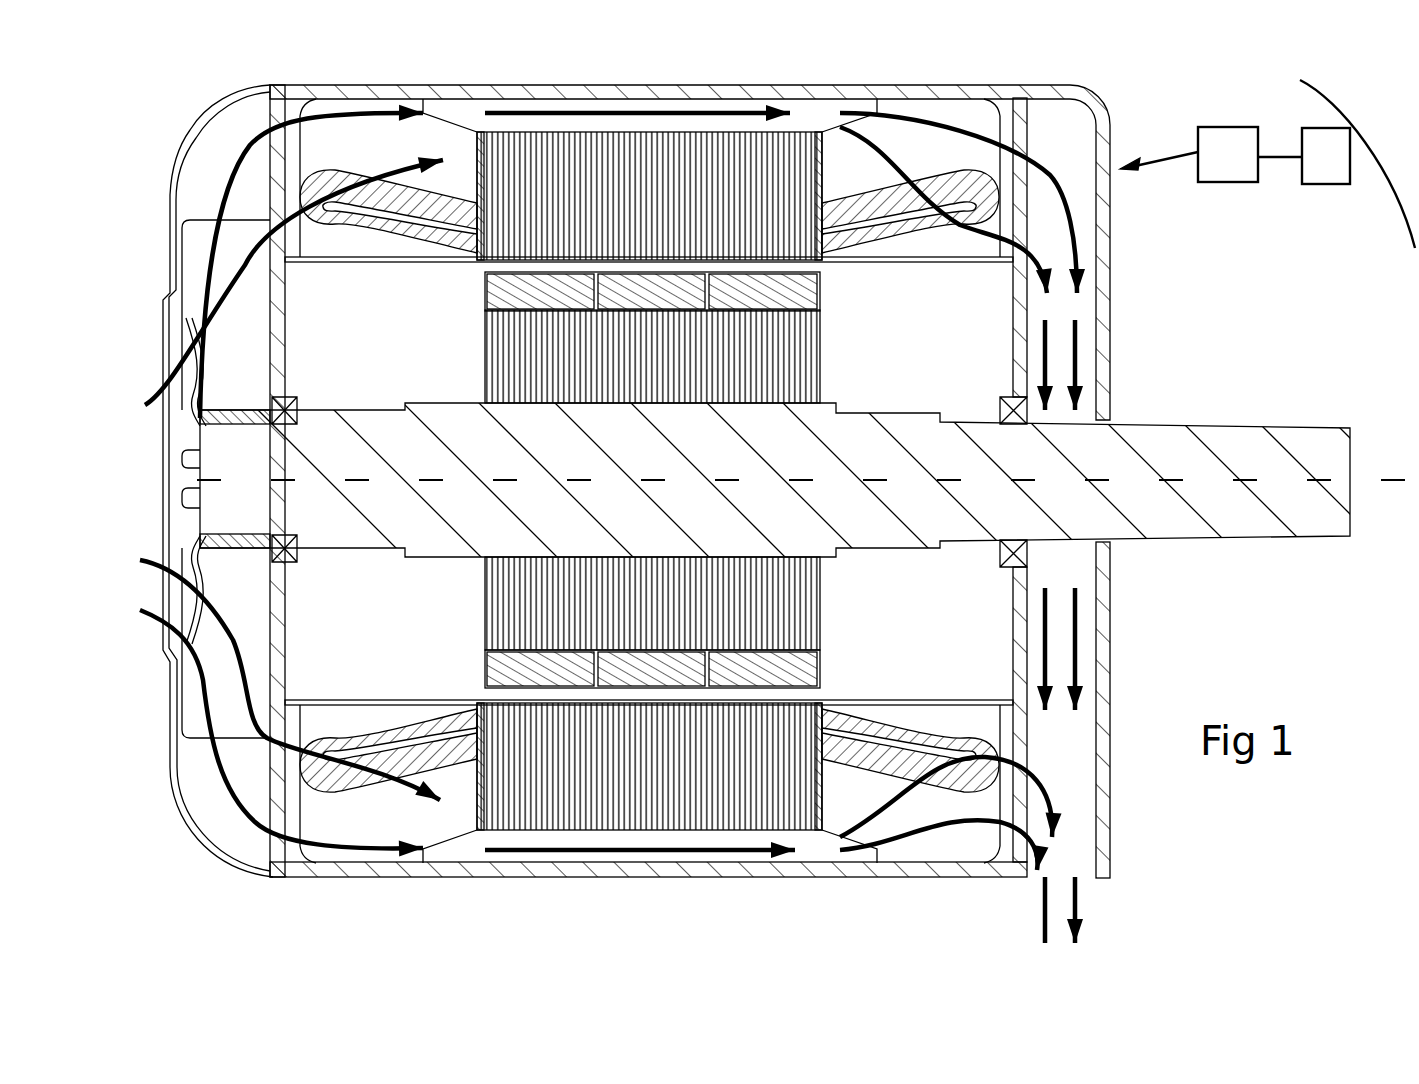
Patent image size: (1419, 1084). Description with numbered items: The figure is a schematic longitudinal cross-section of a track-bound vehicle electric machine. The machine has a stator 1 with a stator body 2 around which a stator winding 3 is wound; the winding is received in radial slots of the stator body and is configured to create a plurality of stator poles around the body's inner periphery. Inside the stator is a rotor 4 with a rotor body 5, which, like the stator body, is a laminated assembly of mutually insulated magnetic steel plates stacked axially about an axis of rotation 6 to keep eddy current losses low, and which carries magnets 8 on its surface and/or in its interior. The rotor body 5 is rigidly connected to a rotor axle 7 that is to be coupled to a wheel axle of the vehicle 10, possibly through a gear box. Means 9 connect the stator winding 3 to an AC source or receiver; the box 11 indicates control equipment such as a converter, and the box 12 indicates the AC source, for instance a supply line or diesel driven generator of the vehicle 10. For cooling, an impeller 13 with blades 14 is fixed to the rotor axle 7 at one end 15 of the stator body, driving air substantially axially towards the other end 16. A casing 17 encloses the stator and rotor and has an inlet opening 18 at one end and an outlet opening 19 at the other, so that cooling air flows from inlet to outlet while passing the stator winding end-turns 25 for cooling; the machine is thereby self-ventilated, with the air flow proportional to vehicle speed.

The stator 1 is at (699, 438).
The stator body 2 is at (750, 130).
The stator winding 3 is at (878, 190).
The rotor 4 is at (649, 480).
The rotor body 5 is at (822, 381).
The axis of rotation 6 is at (1213, 484).
The rotor axle 7 is at (1157, 435).
The magnets 8 is at (492, 298).
The means configured to connect the stator winding to an AC source or receiver 9 is at (1160, 155).
The vehicle 10 is at (1306, 155).
The box indicating control equipment 11 is at (1225, 183).
The box indicating AC source 12 is at (1325, 184).
The impeller 13 is at (180, 375).
The blades 14 is at (193, 398).
The one end of the stator body 15 is at (307, 170).
The other end of the stator body 16 is at (975, 140).
The casing 17 is at (600, 82).
The inlet opening 18 is at (193, 430).
The outlet opening 19 is at (1080, 863).
The stator winding end-turns 25 is at (985, 180).